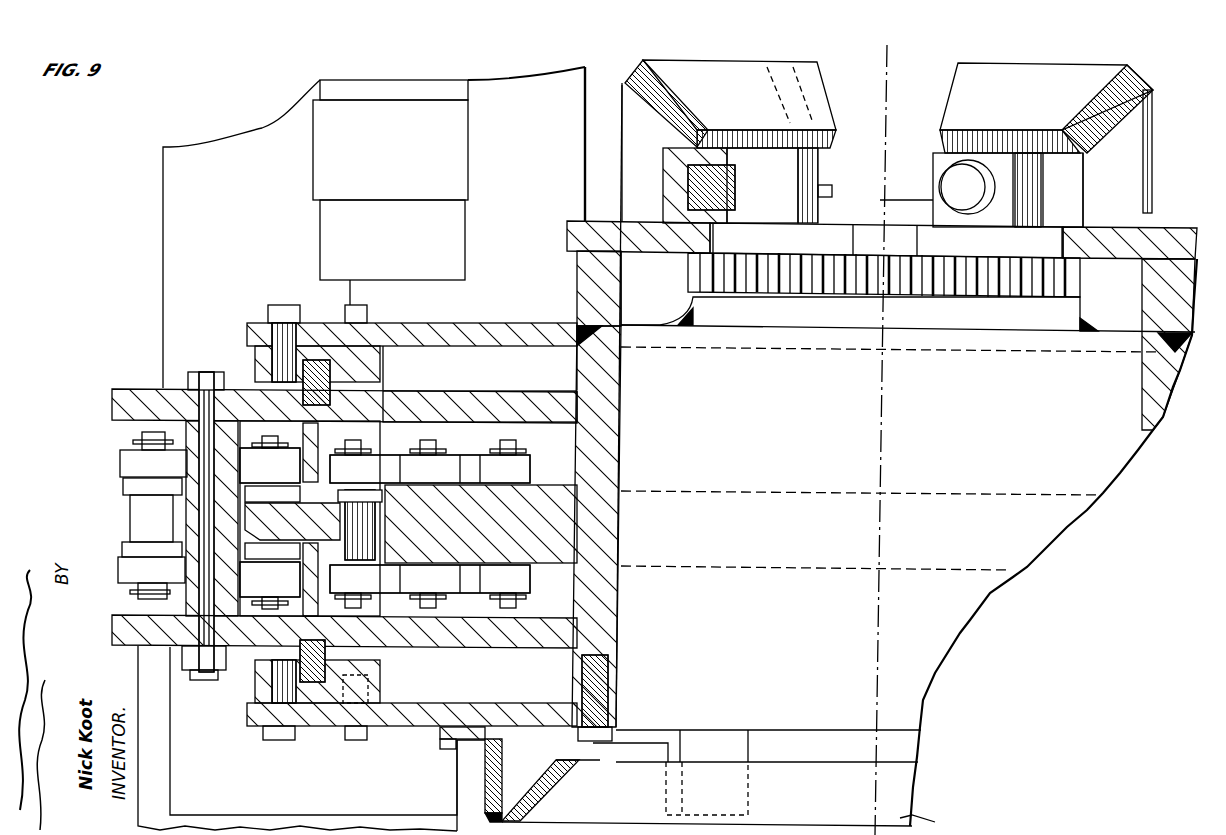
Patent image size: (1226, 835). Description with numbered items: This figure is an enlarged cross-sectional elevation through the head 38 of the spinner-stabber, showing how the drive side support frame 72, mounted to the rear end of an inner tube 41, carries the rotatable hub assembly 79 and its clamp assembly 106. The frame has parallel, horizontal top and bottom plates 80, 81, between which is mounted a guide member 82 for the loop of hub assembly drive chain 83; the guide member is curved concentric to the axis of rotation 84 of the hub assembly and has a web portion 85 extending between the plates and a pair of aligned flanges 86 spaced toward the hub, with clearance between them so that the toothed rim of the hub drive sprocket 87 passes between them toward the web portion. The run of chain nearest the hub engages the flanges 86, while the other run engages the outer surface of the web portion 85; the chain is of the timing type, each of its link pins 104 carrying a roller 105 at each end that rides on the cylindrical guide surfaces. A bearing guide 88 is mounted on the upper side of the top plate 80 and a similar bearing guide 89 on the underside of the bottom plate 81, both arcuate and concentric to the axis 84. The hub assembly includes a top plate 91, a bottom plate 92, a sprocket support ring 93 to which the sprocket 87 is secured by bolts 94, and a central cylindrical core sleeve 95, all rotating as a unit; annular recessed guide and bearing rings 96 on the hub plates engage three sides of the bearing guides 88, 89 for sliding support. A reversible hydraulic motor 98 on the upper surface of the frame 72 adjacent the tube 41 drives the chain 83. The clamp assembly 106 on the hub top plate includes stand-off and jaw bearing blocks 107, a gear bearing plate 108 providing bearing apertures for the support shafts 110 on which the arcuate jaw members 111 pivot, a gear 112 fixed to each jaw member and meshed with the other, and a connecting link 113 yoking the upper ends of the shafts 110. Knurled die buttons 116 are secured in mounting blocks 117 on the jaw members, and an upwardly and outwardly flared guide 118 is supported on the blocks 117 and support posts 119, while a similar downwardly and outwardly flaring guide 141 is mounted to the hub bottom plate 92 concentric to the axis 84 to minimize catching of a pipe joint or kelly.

The head 38 is at (115, 210).
The inner tube 41 is at (222, 812).
The drive side support frame 72 is at (108, 392).
The hub assembly 79 is at (1040, 540).
The top plate 80 is at (515, 392).
The bottom plate 81 is at (490, 650).
The guide member 82 is at (466, 406).
The hub assembly drive chain 83 is at (125, 512).
The axis of rotation 84 is at (888, 68).
The web portion 85 is at (125, 472).
The flanges 86 is at (305, 519).
The hub drive sprocket 87 is at (310, 518).
The bearing guide 88 is at (226, 526).
The bearing guide 89 is at (326, 648).
The top plate 91 is at (508, 322).
The bottom plate 92 is at (382, 727).
The sprocket support ring 93 is at (542, 540).
The bolts 94 is at (380, 505).
The core sleeve 95 is at (625, 438).
The guide and bearing rings 96 is at (250, 350).
The hydraulic motor 98 is at (312, 150).
The link pins 104 is at (138, 600).
The roller 105 is at (122, 455).
The clamp assembly 106 is at (858, 70).
The stand-off and jaw bearing blocks 107 is at (578, 272).
The gear bearing plate 108 is at (786, 332).
The support shafts 110 is at (830, 190).
The jaw members 111 is at (566, 232).
The gear 112 is at (688, 282).
The connecting link 113 is at (912, 200).
The die buttons 116 is at (735, 218).
The mounting blocks 117 is at (663, 162).
The guide 118 is at (738, 62).
The support posts 119 is at (622, 95).
The guide 141 is at (928, 820).